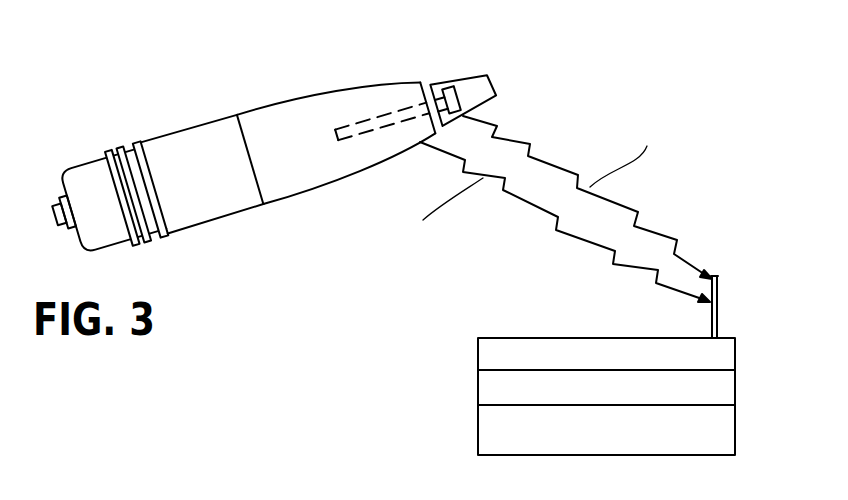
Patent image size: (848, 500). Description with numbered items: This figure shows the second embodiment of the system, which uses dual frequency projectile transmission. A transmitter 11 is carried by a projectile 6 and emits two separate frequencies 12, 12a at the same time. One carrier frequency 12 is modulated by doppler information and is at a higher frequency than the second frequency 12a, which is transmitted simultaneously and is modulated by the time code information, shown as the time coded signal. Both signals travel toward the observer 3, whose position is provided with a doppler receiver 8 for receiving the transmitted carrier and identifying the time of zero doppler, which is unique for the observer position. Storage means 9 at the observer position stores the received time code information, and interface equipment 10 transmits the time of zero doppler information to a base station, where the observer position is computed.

The observer 3 is at (748, 356).
The projectile 6 is at (280, 102).
The doppler receiver 8 is at (492, 352).
The storage means 9 is at (500, 389).
The interface equipment 10 is at (500, 429).
The transmitter 11 is at (371, 117).
The carrier frequency 12 is at (552, 160).
The time coded signal frequency 12a is at (507, 190).